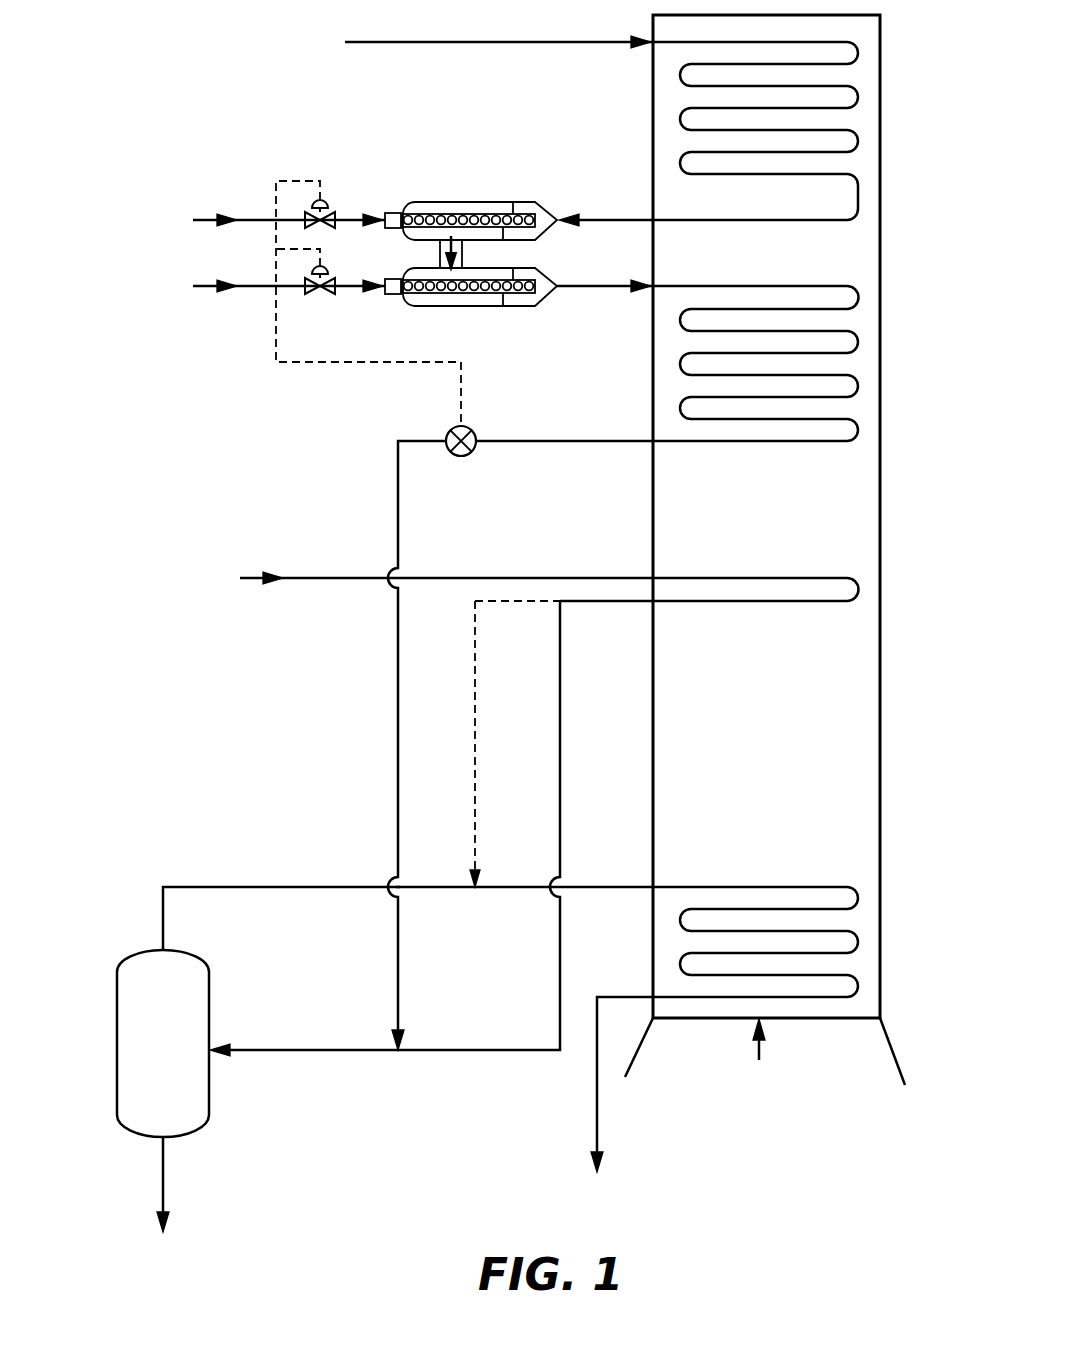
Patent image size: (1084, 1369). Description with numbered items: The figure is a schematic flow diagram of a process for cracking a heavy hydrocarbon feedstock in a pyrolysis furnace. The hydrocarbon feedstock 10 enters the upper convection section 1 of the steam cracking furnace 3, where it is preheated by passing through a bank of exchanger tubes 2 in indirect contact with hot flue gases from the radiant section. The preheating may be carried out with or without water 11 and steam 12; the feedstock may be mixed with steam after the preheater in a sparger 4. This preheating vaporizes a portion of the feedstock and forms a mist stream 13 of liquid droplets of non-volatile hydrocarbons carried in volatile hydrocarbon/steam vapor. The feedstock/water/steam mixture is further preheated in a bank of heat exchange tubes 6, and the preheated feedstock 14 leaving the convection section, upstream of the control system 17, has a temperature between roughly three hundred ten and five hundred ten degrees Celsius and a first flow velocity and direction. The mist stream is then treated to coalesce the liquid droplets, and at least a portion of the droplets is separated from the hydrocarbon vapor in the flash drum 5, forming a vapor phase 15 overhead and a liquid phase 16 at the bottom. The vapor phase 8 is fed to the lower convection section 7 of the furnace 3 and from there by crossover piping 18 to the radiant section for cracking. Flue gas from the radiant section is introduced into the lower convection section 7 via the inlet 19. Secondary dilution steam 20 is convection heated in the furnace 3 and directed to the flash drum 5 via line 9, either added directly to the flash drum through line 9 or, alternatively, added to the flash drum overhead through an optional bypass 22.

The upper convection section 1 is at (870, 160).
The bank of exchanger tubes 2 is at (860, 94).
The steam cracking furnace 3 is at (880, 492).
The sparger 4 is at (410, 202).
The flash drum 5 is at (163, 1043).
The bank of heat exchange tubes 6 is at (858, 318).
The lower convection section 7 is at (858, 915).
The vapor phase 8 is at (600, 887).
The line 9 is at (355, 1050).
The hydrocarbon feedstock 10 is at (397, 42).
The water 11 is at (204, 220).
The steam 12 is at (258, 286).
The mist stream 13 is at (575, 288).
The preheated feedstock 14 is at (513, 441).
The vapor phase 15 is at (190, 887).
The liquid phase 16 is at (163, 1193).
The control system 17 is at (449, 429).
The crossover piping 18 is at (597, 1125).
The flue gas inlet 19 is at (759, 1059).
The secondary dilution steam 20 is at (256, 578).
The bypass 22 is at (475, 637).